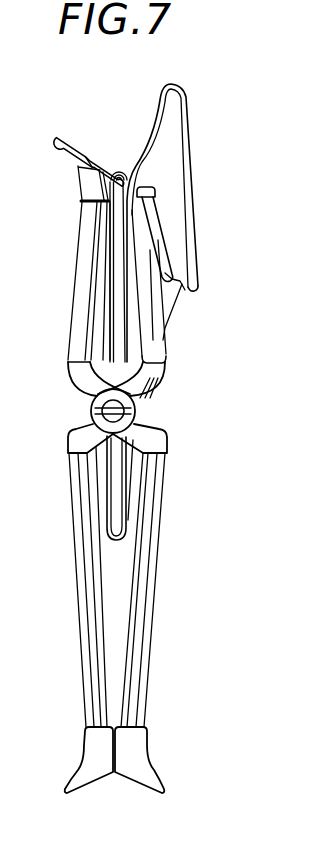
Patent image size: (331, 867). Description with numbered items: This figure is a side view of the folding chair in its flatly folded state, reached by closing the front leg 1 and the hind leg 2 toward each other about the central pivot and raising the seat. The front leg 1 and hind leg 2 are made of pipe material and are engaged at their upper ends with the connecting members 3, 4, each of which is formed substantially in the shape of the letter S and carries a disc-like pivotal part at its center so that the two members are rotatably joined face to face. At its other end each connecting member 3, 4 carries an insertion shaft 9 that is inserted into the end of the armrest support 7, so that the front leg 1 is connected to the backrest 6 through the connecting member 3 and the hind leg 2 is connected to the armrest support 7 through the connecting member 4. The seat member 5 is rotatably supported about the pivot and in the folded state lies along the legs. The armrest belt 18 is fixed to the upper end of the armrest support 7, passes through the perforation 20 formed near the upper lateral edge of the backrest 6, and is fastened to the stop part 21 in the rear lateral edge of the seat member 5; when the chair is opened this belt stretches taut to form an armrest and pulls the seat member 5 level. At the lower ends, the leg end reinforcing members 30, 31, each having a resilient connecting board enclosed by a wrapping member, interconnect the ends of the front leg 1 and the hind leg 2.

The front leg 1 is at (85, 610).
The hind leg 2 is at (147, 613).
The connecting member 3 is at (78, 437).
The connecting member 4 is at (153, 440).
The seat member 5 is at (113, 298).
The backrest 6 is at (175, 125).
The armrest support 7 is at (88, 237).
The insertion shaft 9 is at (4, 482).
The armrest belt 18 is at (157, 402).
The perforation 20 is at (116, 540).
The stop part 21 is at (62, 149).
The leg end reinforcing member 30 is at (97, 753).
The leg end reinforcing member 31 is at (133, 752).